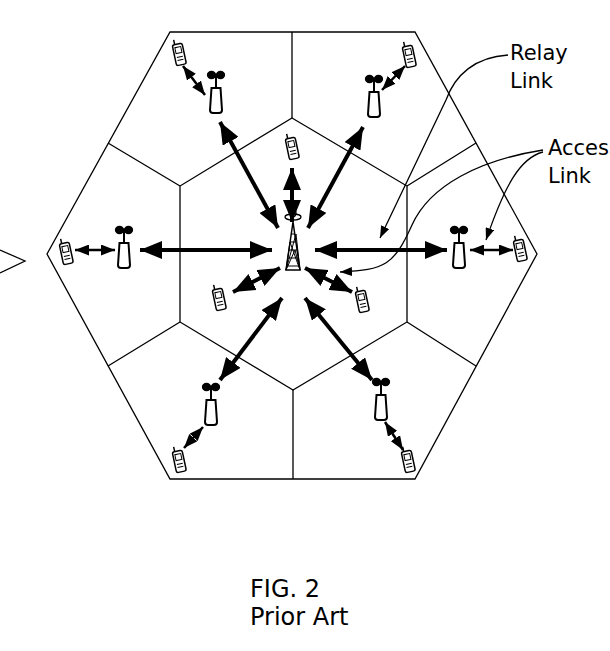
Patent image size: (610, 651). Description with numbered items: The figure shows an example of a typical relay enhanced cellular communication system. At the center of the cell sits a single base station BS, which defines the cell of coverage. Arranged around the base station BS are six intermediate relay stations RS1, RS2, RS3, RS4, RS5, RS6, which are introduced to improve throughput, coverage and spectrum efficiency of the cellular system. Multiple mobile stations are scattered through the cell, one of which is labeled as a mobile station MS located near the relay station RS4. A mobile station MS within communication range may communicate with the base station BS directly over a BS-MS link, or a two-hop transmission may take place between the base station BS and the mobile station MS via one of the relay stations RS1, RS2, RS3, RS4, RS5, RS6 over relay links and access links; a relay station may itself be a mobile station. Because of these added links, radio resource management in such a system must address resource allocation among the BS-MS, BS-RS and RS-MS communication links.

The base station BS is at (294, 256).
The relay station RS1 is at (233, 80).
The relay station RS2 is at (359, 84).
The relay station RS3 is at (469, 264).
The relay station RS4 is at (359, 400).
The relay station RS5 is at (190, 405).
The relay station RS6 is at (126, 261).
The mobile station MS is at (415, 446).